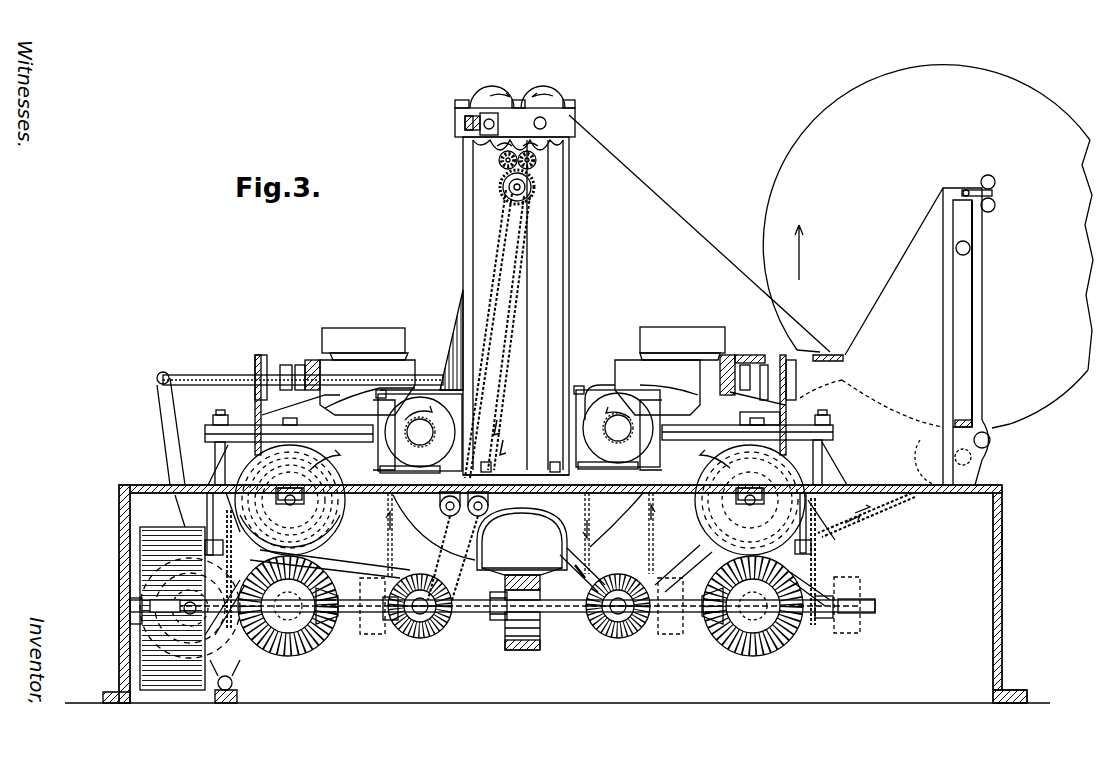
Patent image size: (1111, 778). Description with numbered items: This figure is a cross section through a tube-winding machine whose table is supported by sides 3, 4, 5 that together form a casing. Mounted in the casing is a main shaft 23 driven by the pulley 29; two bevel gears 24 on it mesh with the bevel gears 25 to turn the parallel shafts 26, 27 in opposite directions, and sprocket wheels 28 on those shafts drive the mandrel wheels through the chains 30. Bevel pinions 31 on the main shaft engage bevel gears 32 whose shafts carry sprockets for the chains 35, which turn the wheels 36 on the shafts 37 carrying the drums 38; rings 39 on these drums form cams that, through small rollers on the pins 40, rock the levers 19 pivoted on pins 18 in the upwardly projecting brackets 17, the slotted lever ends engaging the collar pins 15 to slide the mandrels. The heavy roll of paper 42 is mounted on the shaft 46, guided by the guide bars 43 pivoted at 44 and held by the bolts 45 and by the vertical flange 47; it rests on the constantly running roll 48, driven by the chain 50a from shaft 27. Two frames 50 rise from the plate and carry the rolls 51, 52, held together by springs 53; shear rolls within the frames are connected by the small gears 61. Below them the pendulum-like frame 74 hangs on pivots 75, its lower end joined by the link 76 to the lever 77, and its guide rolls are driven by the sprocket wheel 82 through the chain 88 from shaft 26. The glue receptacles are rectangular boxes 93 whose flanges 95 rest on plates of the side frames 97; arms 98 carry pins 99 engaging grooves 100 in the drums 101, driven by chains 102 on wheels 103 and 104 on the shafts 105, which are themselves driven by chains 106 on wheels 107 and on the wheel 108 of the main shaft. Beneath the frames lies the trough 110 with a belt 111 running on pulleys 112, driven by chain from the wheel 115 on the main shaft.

The side 3 is at (557, 594).
The side 4 is at (112, 588).
The side 5 is at (1003, 551).
The pin 15 is at (617, 393).
The bracket 17 is at (212, 478).
The pin 18 is at (832, 408).
The lever 19 is at (315, 440).
The main shaft 23 is at (578, 614).
The bevel gear 24 is at (406, 618).
The bevel gear 25 is at (425, 616).
The parallel shaft 26 is at (448, 622).
The parallel shaft 27 is at (592, 634).
The sprocket wheel 28 is at (420, 585).
The pulley 29 is at (178, 655).
The chain 30 is at (390, 531).
The bevel pinion 31 is at (330, 628).
The bevel gear 32 is at (290, 656).
The chain 35 is at (322, 556).
The wheel 36 is at (334, 511).
The shaft 37 is at (520, 511).
The drum 38 is at (318, 528).
The ring 39 is at (336, 472).
The pin 40 is at (745, 414).
The roll of paper 42 is at (928, 246).
The guide bar 43 is at (980, 325).
The pivot 44 is at (991, 440).
The bolt 45 is at (996, 193).
The shaft 46 is at (971, 247).
The vertical flange 47 is at (950, 312).
The roll 48 is at (968, 428).
The frame 50 is at (563, 305).
The chain 50a is at (912, 500).
The roll 51 is at (545, 97).
The roll 52 is at (492, 96).
The spring 53 is at (470, 128).
The small gear 61 is at (535, 166).
The pendulum-like frame 74 is at (455, 312).
The pivot 75 is at (528, 185).
The link 76 is at (202, 375).
The lever 77 is at (160, 429).
The sprocket wheel 82 is at (538, 195).
The chain 88 is at (498, 442).
The rectangular box 93 is at (523, 340).
The flange 95 is at (407, 352).
The side frame 97 is at (510, 387).
The arm 98 is at (303, 365).
The pin 99 is at (286, 365).
The groove 100 is at (306, 401).
The drum 101 is at (266, 354).
The chain 102 is at (262, 356).
The wheel 103 is at (268, 368).
The wheel 104 is at (817, 558).
The shaft 105 is at (840, 548).
The chain 106 is at (818, 571).
The wheel 107 is at (830, 532).
The wheel 108 is at (238, 645).
The trough 110 is at (530, 535).
The belt 111 is at (522, 648).
The pulley 112 is at (507, 628).
The wheel 115 is at (497, 618).